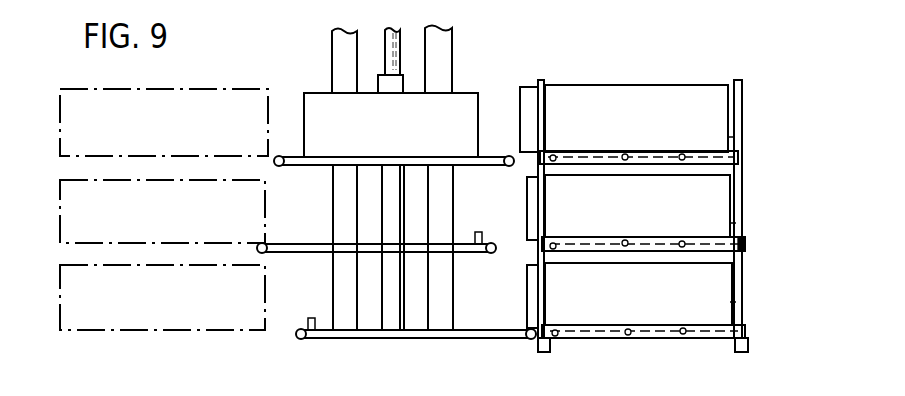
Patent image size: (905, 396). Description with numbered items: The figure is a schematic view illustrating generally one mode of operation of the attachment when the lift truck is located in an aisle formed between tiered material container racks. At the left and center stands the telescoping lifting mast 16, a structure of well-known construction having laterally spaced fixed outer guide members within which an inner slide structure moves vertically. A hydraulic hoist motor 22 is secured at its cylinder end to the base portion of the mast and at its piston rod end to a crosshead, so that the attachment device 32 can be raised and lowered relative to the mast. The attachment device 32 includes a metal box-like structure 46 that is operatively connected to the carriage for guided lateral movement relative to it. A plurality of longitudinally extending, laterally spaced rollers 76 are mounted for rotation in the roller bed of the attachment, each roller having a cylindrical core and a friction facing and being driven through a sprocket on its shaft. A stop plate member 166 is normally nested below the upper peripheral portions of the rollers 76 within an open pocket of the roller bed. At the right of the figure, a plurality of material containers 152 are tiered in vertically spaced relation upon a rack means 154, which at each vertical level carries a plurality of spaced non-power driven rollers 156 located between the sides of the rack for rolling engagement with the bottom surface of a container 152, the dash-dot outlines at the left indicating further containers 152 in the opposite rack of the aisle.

The telescoping lifting mast 16 is at (453, 43).
The hydraulic hoist motor 22 is at (404, 83).
The attachment device 32 is at (481, 123).
The box-like structure 46 is at (401, 127).
The rollers 76 is at (506, 168).
The material containers 152 is at (180, 95).
The rack means 154 is at (742, 85).
The non-power driven rollers 156 is at (626, 243).
The stop plate member 166 is at (478, 232).